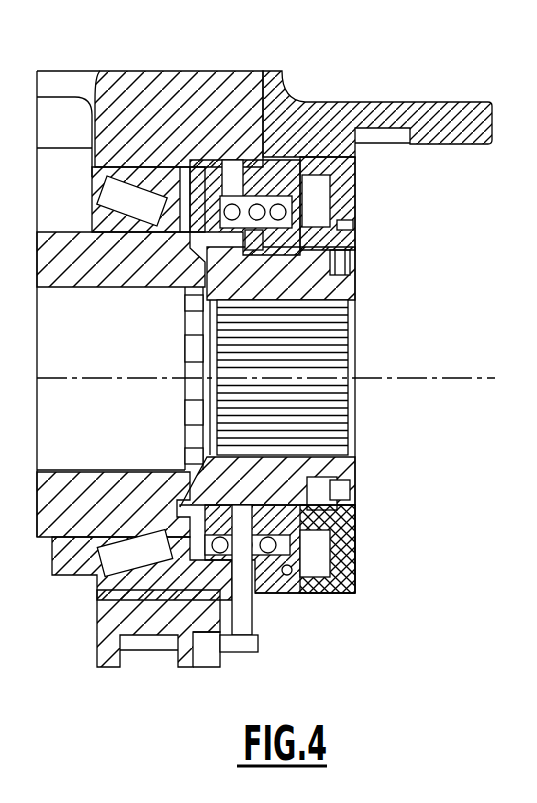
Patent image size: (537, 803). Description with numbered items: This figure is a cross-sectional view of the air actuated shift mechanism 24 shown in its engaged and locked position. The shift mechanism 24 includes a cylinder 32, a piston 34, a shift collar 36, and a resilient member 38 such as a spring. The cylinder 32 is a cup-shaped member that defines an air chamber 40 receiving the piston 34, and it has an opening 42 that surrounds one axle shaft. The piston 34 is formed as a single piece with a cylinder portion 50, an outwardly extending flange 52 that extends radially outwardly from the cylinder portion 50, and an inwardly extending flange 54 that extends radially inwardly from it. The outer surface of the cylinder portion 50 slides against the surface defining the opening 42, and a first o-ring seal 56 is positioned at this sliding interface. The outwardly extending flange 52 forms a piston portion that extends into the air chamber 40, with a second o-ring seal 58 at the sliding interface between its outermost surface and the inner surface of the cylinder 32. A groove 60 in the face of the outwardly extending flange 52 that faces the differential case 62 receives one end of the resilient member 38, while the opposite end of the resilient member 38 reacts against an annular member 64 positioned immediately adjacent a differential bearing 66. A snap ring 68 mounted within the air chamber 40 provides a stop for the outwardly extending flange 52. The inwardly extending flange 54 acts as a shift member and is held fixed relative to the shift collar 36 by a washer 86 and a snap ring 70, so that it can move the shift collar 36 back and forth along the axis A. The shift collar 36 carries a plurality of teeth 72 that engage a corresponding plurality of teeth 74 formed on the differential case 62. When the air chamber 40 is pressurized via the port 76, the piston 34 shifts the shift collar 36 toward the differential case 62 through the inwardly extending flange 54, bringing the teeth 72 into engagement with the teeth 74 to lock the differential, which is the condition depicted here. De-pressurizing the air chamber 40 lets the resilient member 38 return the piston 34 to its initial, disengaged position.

The shift mechanism 24 is at (440, 310).
The cylinder 32 is at (343, 594).
The piston 34 is at (355, 503).
The shift collar 36 is at (197, 481).
The resilient member 38 is at (245, 655).
The air chamber 40 is at (308, 570).
The opening 42 is at (355, 520).
The cylinder portion 50 is at (355, 238).
The outwardly extending flange 52 is at (355, 200).
The inwardly extending flange 54 is at (355, 263).
The first o-ring seal 56 is at (367, 549).
The second o-ring seal 58 is at (286, 180).
The groove 60 is at (355, 584).
The differential case 62 is at (133, 270).
The annular member 64 is at (193, 172).
The differential bearing 66 is at (127, 202).
The snap ring 68 is at (263, 175).
The snap ring 70 is at (350, 482).
The teeth 72 is at (192, 413).
The teeth 74 is at (203, 376).
The port 76 is at (355, 167).
The washer 86 is at (330, 487).
The axis A is at (462, 378).